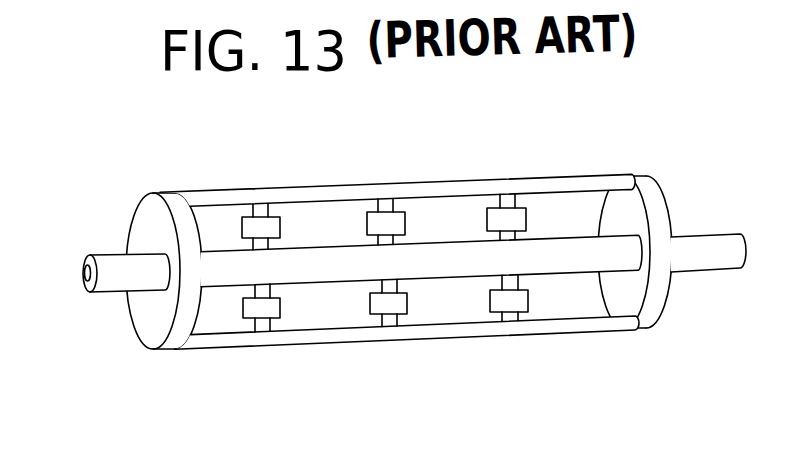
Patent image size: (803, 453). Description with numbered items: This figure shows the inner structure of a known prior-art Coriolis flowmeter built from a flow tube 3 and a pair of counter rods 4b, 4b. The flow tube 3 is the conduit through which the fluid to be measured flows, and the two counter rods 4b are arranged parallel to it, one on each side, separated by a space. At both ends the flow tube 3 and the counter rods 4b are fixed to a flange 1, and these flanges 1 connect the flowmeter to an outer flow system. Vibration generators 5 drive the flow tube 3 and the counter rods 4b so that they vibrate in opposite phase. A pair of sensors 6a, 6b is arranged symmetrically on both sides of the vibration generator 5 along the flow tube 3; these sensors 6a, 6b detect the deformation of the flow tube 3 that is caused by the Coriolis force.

The flange 1 is at (660, 191).
The flow tube 3 is at (97, 293).
The counter rod 4b is at (425, 183).
The vibration generator 5 is at (370, 305).
The sensor 6a is at (242, 313).
The sensor 6b is at (529, 303).